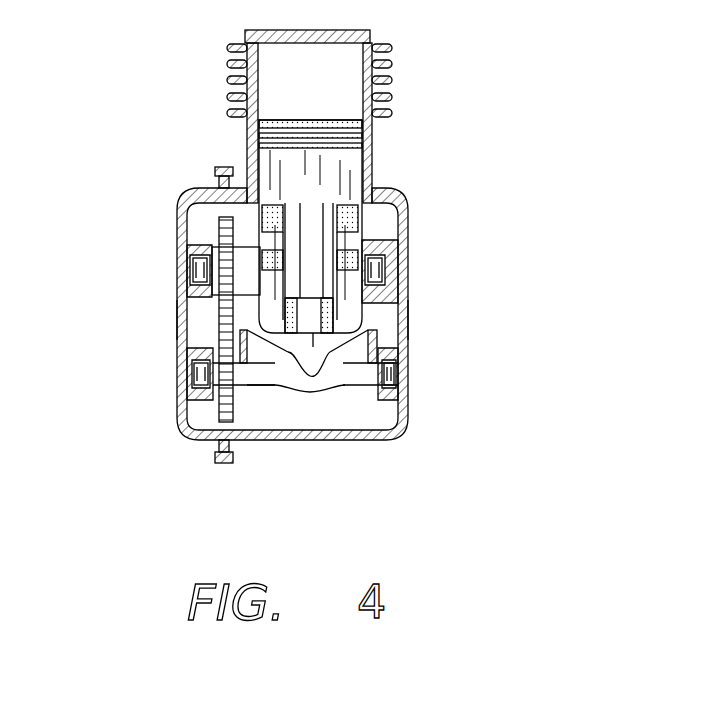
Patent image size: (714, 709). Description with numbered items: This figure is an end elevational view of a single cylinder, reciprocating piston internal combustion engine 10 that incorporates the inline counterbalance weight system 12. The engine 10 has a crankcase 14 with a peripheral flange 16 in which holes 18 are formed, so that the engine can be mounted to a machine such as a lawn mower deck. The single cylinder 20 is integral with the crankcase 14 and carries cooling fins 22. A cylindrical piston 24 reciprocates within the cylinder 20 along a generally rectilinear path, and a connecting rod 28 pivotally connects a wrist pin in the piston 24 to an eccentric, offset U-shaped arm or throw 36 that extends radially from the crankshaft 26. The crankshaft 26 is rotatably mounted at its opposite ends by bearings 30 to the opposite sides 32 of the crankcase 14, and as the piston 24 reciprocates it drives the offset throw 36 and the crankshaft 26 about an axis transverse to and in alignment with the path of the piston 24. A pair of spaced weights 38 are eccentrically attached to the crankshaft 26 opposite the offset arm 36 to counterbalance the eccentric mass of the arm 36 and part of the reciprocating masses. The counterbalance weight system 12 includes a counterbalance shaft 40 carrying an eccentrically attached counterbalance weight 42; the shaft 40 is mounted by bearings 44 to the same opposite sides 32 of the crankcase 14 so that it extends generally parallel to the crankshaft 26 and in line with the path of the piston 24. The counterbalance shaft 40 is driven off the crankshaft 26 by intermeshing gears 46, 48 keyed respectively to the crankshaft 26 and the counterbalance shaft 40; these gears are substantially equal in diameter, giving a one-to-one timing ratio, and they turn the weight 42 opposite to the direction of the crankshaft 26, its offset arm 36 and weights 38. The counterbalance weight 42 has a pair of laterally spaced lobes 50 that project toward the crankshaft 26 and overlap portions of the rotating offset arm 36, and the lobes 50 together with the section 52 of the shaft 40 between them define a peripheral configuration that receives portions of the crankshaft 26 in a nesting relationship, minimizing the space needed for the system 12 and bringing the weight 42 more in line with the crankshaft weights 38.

The internal combustion engine 10 is at (463, 80).
The inline counterbalance weight system 12 is at (405, 323).
The crankcase 14 is at (410, 212).
The peripheral flange 16 is at (216, 170).
The holes 18 is at (213, 175).
The cylinder 20 is at (247, 155).
The cooling fins 22 is at (392, 71).
The piston 24 is at (340, 175).
The crankshaft 26 is at (380, 268).
The connecting rod 28 is at (310, 240).
The bearings 30 is at (207, 245).
The opposite sides of the crankcase 32 is at (178, 320).
The offset U-shaped arm or throw 36 is at (318, 340).
The weights 38 is at (177, 203).
The counterbalance shaft 40 is at (360, 375).
The counterbalance weight 42 is at (255, 345).
The bearings 44 is at (203, 388).
The gear 46 is at (220, 305).
The gear 48 is at (218, 422).
The lobes 50 is at (190, 340).
The section of the shaft 52 is at (312, 392).